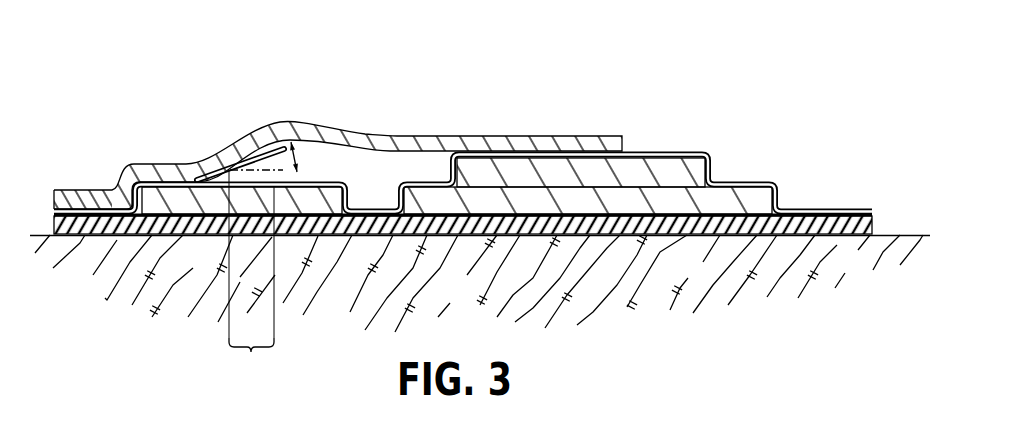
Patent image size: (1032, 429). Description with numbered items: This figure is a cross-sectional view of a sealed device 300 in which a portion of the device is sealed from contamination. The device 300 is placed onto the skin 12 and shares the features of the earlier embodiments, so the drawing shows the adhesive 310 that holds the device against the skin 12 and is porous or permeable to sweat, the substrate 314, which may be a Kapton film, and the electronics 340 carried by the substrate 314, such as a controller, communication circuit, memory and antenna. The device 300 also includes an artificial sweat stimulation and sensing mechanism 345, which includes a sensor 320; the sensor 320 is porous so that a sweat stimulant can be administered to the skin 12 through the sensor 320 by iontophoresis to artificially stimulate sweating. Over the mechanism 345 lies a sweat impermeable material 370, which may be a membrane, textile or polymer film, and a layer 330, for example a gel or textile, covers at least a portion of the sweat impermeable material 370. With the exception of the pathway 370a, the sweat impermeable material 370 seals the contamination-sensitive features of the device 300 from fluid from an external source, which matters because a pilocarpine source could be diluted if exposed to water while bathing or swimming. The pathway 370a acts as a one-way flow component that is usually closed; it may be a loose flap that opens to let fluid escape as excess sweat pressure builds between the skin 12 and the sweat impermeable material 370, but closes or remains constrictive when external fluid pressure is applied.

The sealed device 300 is at (463, 196).
The adhesive 310 is at (837, 214).
The substrate 314 is at (733, 190).
The sensor 320 is at (318, 181).
The layer 330 is at (558, 135).
The electronics 340 is at (653, 158).
The artificial sweat stimulation and sensing mechanism 345 is at (168, 207).
The sweat impermeable material 370 is at (157, 182).
The pathway 370a is at (253, 279).
The skin 12 is at (590, 292).